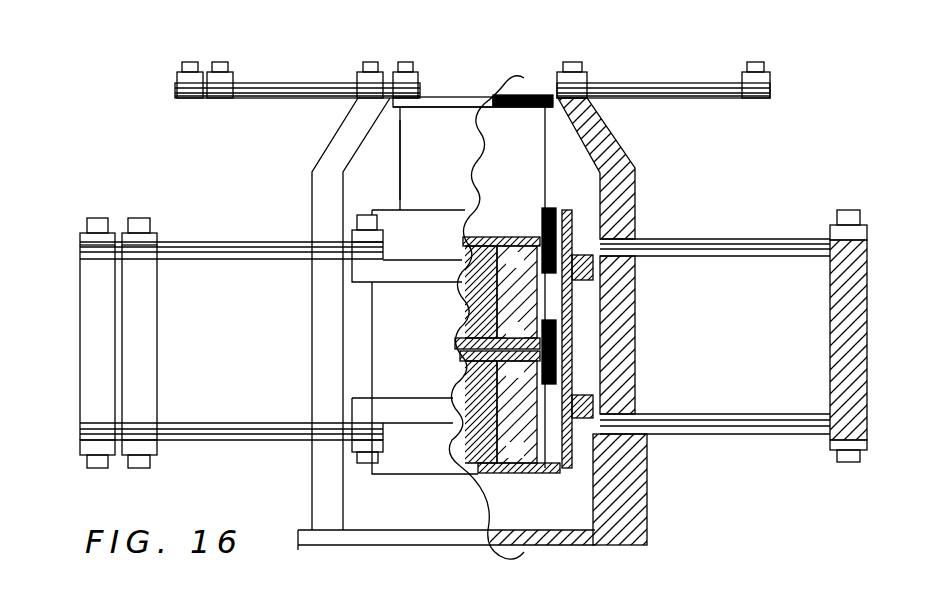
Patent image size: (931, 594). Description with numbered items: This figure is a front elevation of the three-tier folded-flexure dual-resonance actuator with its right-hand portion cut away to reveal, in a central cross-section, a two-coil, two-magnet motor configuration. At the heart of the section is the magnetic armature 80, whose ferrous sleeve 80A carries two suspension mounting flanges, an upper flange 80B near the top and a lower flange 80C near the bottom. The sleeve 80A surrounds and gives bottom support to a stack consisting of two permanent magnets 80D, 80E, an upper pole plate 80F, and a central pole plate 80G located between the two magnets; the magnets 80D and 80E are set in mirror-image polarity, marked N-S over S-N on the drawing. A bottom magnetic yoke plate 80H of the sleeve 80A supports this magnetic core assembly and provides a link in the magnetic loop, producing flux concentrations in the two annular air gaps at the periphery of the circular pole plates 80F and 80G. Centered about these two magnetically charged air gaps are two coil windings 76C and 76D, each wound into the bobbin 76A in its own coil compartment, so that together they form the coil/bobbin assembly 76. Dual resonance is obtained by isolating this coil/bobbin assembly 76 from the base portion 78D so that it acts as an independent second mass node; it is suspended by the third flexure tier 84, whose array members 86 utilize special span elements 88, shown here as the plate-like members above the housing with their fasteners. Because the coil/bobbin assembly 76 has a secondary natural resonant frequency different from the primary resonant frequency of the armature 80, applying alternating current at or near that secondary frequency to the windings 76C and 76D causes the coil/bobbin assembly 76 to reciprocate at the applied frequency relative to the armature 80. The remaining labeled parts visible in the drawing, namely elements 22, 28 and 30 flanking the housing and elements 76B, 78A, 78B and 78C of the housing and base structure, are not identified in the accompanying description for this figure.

The pipe 22 is at (178, 260).
The flange assembly 28 is at (78, 222).
The pipe wall 30 is at (176, 269).
The coil/bobbin assembly 76 is at (391, 197).
The bobbin 76A is at (467, 143).
The housing lip 76B is at (442, 97).
The coil winding 76C is at (557, 210).
The coil winding 76D is at (572, 382).
The base plate 78A is at (458, 538).
The lower body block 78B is at (637, 480).
The middle body wall 78C is at (633, 322).
The base portion 78D is at (633, 217).
The armature 80 is at (360, 302).
The ferrous sleeve 80A is at (460, 236).
The suspension mounting flange 80B is at (443, 270).
The suspension mounting flange 80C is at (370, 386).
The permanent magnet 80D is at (475, 288).
The permanent magnet 80E is at (457, 357).
The upper pole plate 80F is at (550, 200).
The central pole plate 80G is at (455, 341).
The bottom magnetic yoke plate 80H is at (557, 478).
The third flexure tier 84 is at (163, 57).
The array members 86 is at (264, 72).
The span elements 88 is at (245, 100).